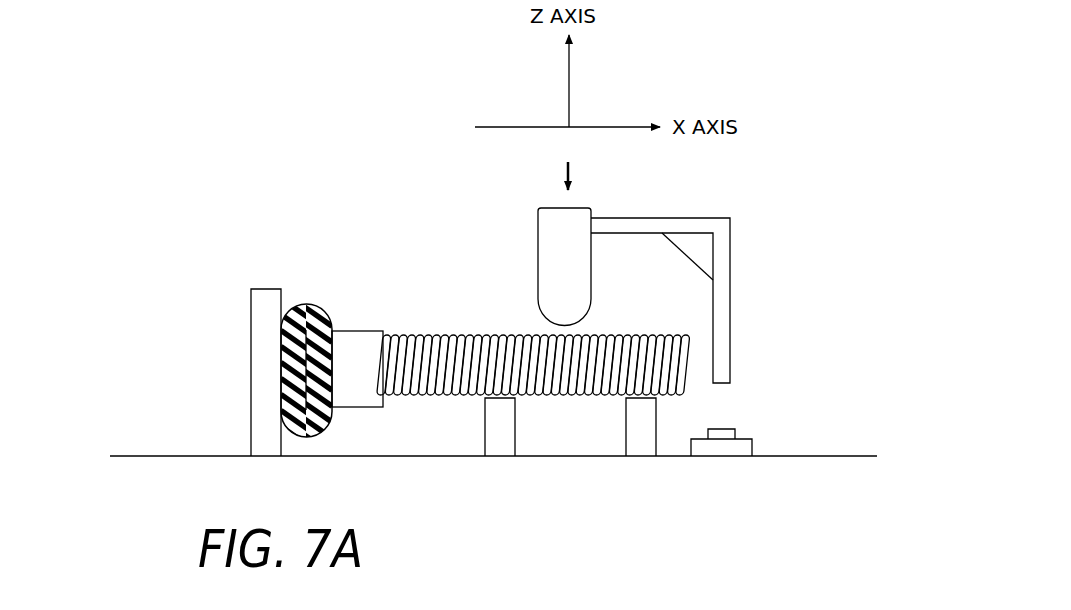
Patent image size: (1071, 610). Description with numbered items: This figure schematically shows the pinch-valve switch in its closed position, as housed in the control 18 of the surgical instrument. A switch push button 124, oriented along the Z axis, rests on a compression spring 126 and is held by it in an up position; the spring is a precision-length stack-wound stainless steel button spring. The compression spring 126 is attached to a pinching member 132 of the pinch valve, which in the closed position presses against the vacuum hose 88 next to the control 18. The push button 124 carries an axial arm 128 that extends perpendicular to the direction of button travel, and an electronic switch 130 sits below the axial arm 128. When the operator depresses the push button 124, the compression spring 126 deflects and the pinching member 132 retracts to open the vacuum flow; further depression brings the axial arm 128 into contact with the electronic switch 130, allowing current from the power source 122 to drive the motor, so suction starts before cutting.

The control 18 is at (265, 388).
The vacuum hose 88 is at (312, 302).
The pinching member 132 is at (360, 330).
The compression spring 126 is at (483, 336).
The switch push button 124 is at (538, 261).
The axial arm 128 is at (731, 297).
The electronic switch 130 is at (730, 427).
The power source 122 is at (753, 442).